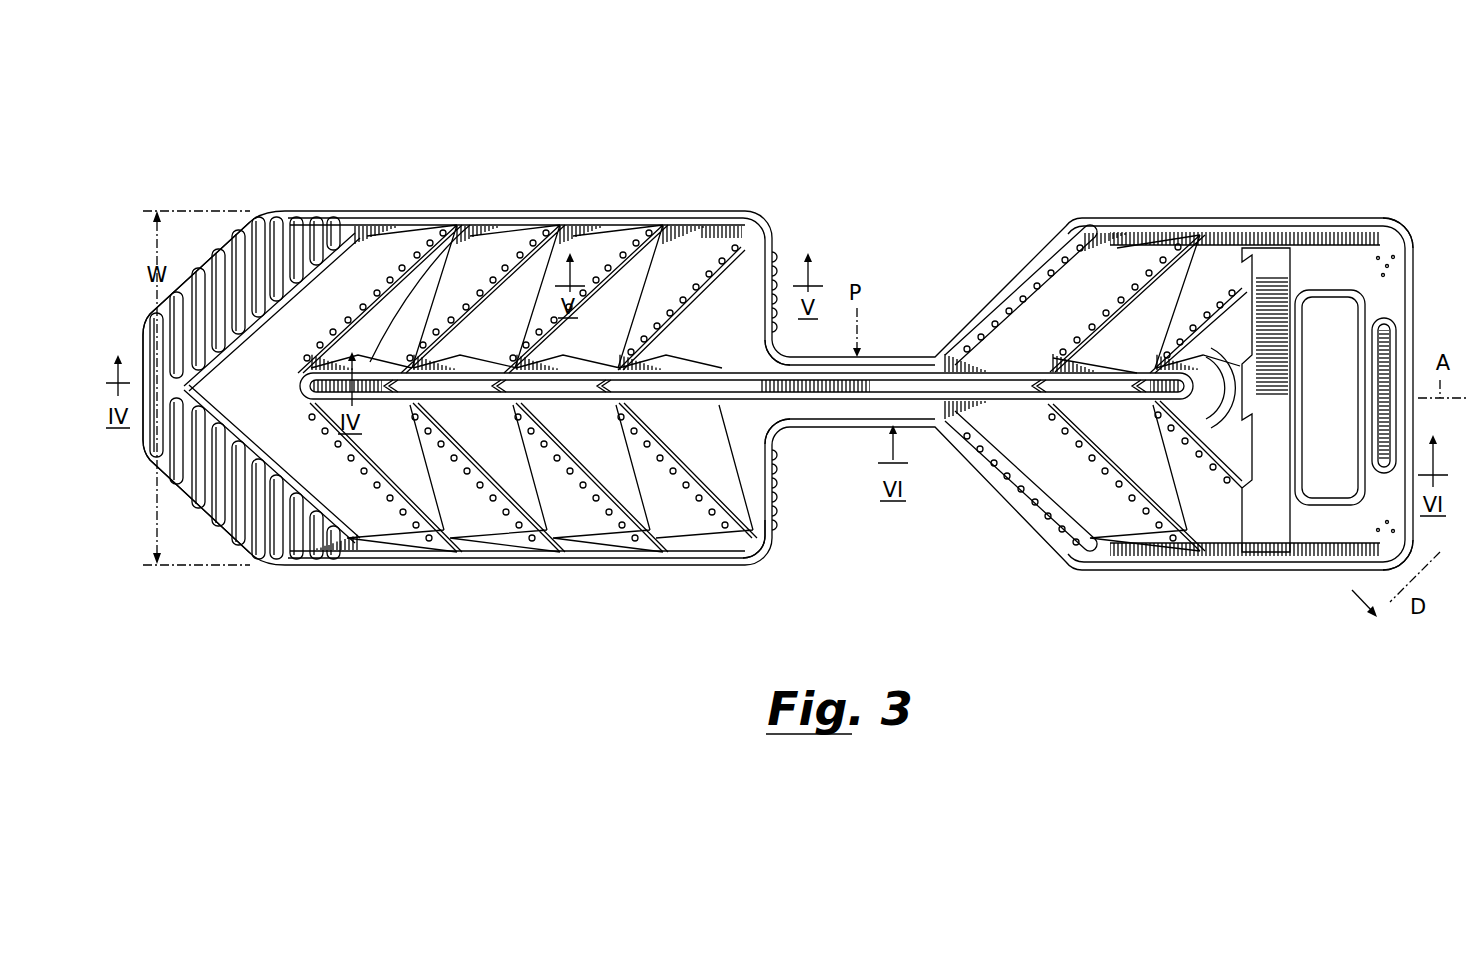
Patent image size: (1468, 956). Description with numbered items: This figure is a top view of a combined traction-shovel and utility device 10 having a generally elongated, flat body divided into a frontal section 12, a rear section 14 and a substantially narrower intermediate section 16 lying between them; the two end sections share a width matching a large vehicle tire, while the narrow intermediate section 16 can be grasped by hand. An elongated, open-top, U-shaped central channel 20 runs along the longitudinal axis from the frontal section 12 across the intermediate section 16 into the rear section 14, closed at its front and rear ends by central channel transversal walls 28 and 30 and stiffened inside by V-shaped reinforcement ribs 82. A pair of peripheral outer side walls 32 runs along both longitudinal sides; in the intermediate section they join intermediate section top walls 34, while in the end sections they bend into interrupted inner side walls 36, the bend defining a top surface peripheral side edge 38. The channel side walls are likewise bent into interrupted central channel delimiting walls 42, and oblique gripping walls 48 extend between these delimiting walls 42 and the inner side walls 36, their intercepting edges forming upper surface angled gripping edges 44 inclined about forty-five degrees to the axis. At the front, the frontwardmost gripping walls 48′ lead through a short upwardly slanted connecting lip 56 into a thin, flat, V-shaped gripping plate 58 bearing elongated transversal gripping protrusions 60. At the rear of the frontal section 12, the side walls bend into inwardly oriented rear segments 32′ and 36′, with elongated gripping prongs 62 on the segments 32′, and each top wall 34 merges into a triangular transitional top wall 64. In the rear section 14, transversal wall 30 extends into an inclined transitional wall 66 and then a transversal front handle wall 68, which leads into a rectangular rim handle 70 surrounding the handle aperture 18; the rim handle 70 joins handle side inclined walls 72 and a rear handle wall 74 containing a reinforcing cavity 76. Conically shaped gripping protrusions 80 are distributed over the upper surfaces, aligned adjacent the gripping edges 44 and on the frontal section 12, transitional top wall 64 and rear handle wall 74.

The combined traction-shovel and utility device 10 is at (686, 88).
The frontal section 12 is at (478, 156).
The rear section 14 is at (1233, 172).
The intermediate section 16 is at (868, 175).
The handle aperture 18 is at (1342, 332).
The central channel 20 is at (962, 382).
The central channel transversal wall 28 is at (320, 470).
The central channel transversal wall 30 is at (590, 548).
The peripheral outer side wall 32 is at (605, 222).
The front section outer side wall rear segment 32′ is at (776, 516).
The intermediate section top wall 34 is at (888, 406).
The peripheral inner side wall 36 is at (557, 567).
The front section inner side wall rear segment 36′ is at (776, 548).
The top surface peripheral side edge 38 is at (558, 222).
The central channel delimiting wall 42 is at (460, 356).
The upper surface angled gripping edge 44 is at (695, 225).
The oblique gripping wall 48 is at (1148, 240).
The frontwardmost gripping wall 48′ is at (272, 572).
The connecting lip 56 is at (325, 232).
The gripping plate 58 is at (198, 572).
The gripping protrusion 60 is at (232, 290).
The rear segment gripping prong 62 is at (776, 466).
The transitional top wall 64 is at (797, 360).
The rear section inclined transitional wall 66 is at (1355, 242).
The front handle wall 68 is at (1265, 552).
The rim handle 70 is at (1295, 548).
The handle side inclined wall 72 is at (1320, 228).
The rear handle wall 74 is at (1412, 346).
The reinforcing cavity 76 is at (1385, 422).
The conically-shaped gripping protrusion 80 is at (433, 243).
The V-shaped reinforcement rib 82 is at (432, 420).